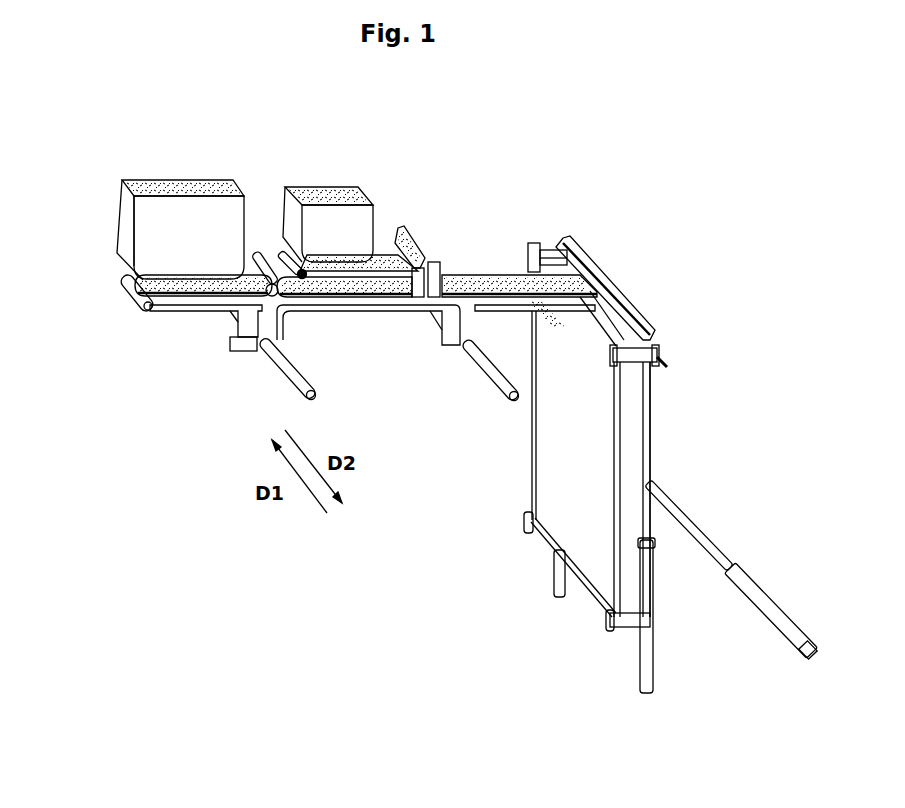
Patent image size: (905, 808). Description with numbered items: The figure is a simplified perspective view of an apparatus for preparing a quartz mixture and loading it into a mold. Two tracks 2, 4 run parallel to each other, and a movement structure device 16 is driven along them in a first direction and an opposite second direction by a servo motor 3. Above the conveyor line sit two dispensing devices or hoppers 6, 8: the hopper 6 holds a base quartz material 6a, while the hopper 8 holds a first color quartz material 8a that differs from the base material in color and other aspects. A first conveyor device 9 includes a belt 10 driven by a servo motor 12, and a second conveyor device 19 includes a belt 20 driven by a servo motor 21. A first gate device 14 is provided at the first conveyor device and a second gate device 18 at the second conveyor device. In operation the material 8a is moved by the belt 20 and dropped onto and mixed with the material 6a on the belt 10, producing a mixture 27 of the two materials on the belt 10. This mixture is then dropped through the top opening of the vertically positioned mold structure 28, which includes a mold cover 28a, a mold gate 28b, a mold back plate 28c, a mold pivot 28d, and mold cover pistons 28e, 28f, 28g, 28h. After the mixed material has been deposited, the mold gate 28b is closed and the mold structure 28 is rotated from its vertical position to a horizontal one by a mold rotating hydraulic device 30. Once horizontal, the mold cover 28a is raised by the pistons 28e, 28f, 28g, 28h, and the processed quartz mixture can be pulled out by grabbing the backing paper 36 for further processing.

The track 2 is at (300, 393).
The servo motor 3 is at (228, 344).
The track 4 is at (497, 386).
The dispensing device or hopper 6 is at (147, 196).
The base quartz material 6a is at (190, 182).
The dispensing device or hopper 8 is at (310, 204).
The first color quartz material 8a is at (332, 202).
The first conveyor device 9 is at (110, 268).
The belt 10 is at (122, 284).
The servo motor 12 is at (146, 308).
The first gate device 14 is at (259, 250).
The movement structure device 16 is at (398, 312).
The second gate device 18 is at (412, 238).
The second conveyor device 19 is at (376, 262).
The belt 20 is at (398, 255).
The servo motor 21 is at (314, 300).
The mixture 27 is at (470, 274).
The mold structure 28 is at (543, 544).
The mold cover 28a is at (588, 362).
The mold gate 28b is at (630, 315).
The mold back plate 28c is at (651, 414).
The mold pivot 28d is at (660, 560).
The mold cover piston 28e is at (522, 523).
The mold cover piston 28f is at (604, 623).
The mold cover piston 28g is at (546, 243).
The mold cover piston 28h is at (660, 352).
The mold rotating hydraulic device 30 is at (712, 531).
The backing paper 36 is at (651, 450).